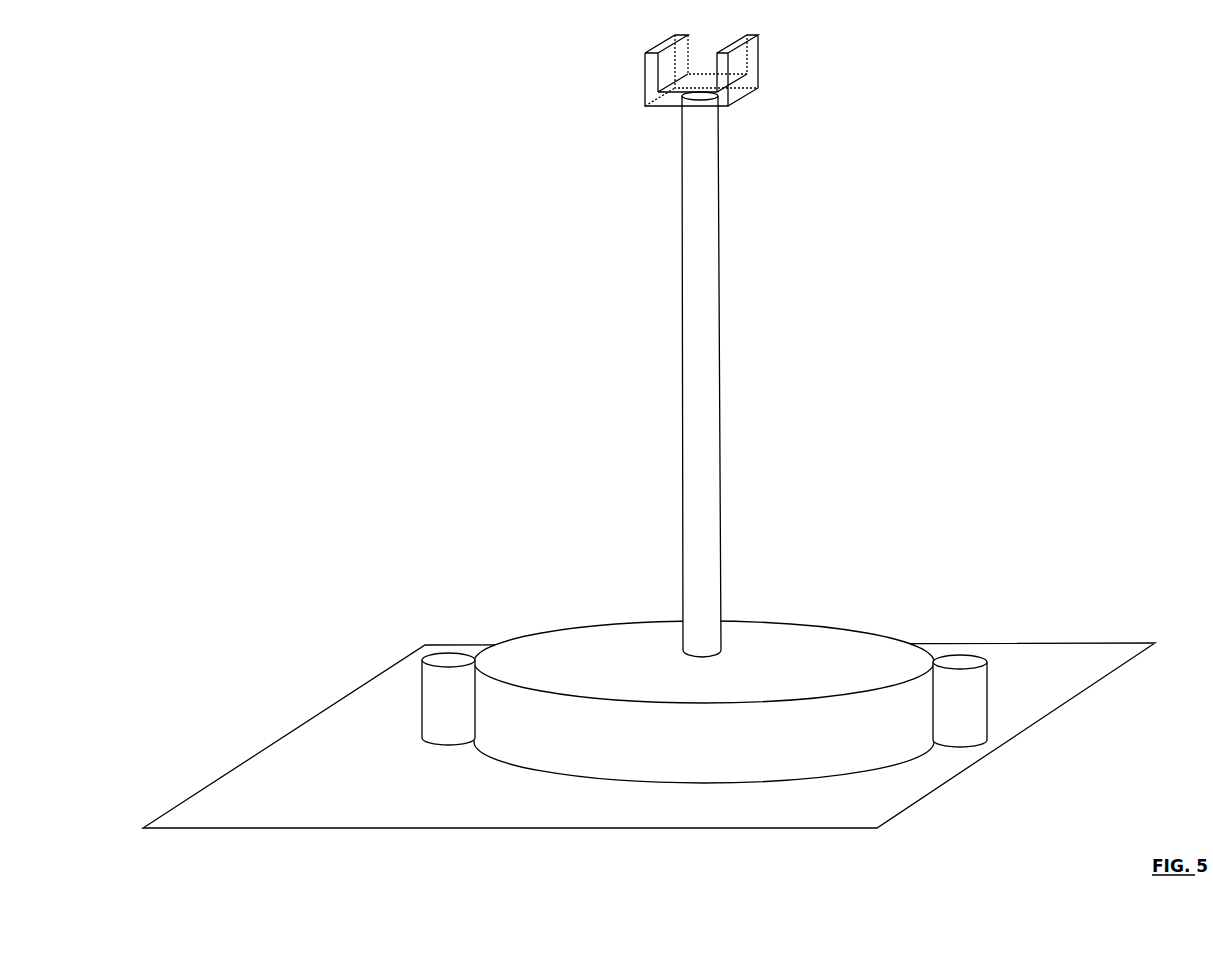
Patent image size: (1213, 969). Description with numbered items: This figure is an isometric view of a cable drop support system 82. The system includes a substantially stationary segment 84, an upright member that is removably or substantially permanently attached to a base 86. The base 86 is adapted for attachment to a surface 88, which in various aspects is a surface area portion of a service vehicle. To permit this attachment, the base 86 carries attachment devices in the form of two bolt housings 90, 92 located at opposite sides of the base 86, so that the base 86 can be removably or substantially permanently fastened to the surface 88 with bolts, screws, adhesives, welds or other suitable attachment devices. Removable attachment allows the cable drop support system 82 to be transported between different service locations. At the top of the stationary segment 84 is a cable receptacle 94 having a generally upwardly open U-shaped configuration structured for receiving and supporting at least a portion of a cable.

The cable drop support system 82 is at (293, 267).
The stationary segment 84 is at (720, 367).
The base 86 is at (810, 652).
The surface 88 is at (271, 783).
The bolt housing 90 is at (448, 652).
The bolt housing 92 is at (988, 697).
The cable receptacle 94 is at (747, 72).